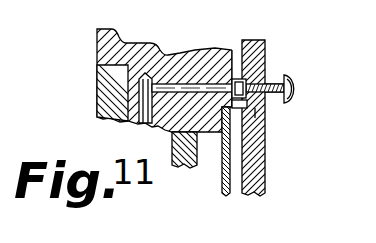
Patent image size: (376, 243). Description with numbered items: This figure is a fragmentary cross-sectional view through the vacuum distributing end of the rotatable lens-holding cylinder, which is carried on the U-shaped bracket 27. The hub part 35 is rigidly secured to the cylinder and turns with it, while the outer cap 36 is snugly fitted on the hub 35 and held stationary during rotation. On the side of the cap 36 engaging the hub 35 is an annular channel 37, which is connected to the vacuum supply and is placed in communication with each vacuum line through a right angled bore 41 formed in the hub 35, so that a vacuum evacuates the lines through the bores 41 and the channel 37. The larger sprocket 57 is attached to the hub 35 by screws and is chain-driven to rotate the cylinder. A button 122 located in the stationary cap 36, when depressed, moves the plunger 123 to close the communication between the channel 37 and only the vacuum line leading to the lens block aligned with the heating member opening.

The hub part 35 is at (128, 43).
The right angled bore 41 is at (178, 84).
The annular channel 37 is at (243, 42).
The outer cap 36 is at (266, 52).
The button 122 is at (294, 82).
The plunger 123 is at (239, 100).
The U-shaped bracket 27 is at (174, 142).
The sprocket 57 is at (219, 179).